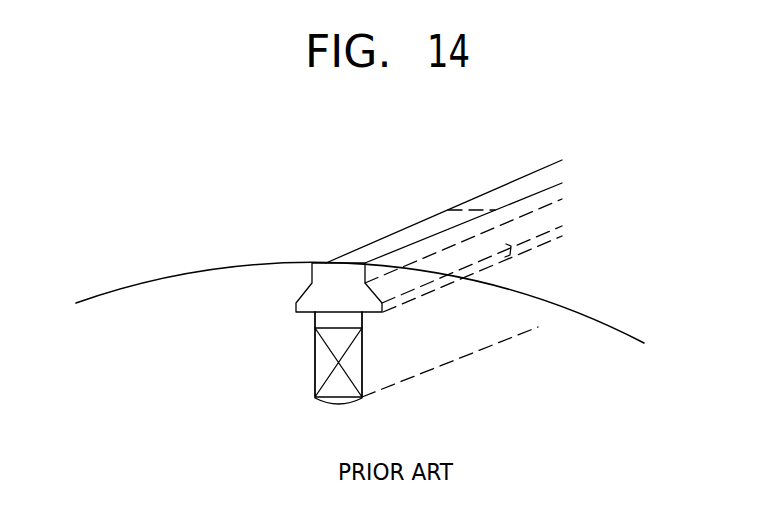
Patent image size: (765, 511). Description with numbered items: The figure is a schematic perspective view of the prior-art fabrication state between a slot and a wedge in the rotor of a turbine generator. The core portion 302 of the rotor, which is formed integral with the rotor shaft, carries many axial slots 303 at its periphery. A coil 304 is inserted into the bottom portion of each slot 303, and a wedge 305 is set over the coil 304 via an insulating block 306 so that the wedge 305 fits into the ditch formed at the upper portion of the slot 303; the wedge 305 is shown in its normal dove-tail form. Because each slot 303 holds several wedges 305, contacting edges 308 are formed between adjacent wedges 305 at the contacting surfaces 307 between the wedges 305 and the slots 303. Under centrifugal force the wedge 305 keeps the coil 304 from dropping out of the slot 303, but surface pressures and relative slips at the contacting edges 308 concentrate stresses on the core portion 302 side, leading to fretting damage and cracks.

The core portion 302 is at (538, 399).
The slot 303 is at (365, 358).
The coil 304 is at (320, 366).
The wedge 305 is at (503, 238).
The insulating block 306 is at (321, 318).
The contacting surface 307 is at (301, 311).
The contacting edge 308 is at (503, 238).